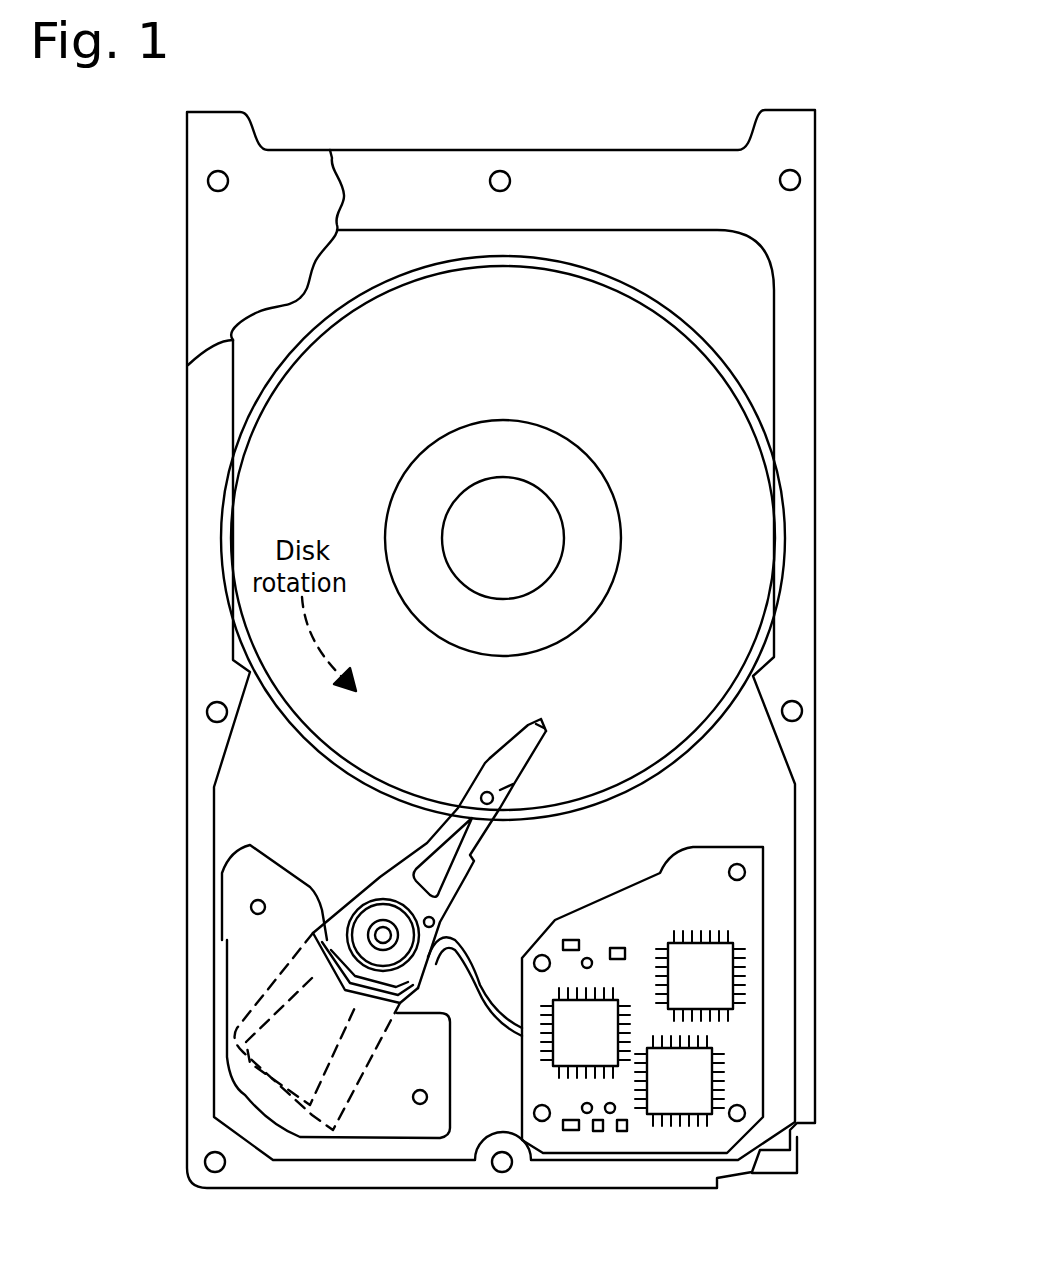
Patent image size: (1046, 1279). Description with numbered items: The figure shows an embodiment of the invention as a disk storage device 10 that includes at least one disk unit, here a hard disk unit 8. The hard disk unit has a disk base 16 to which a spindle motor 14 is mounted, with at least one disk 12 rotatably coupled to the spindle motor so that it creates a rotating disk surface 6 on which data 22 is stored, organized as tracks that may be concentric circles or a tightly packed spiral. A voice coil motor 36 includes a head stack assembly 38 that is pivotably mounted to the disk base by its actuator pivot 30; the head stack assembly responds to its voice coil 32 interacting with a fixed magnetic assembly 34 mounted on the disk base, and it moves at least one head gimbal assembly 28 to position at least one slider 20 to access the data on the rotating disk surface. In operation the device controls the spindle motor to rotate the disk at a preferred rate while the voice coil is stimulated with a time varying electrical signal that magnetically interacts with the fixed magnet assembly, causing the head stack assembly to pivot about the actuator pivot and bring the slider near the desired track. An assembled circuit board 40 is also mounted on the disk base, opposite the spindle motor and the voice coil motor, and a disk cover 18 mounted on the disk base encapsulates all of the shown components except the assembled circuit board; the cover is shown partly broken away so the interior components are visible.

The disk storage device 10 is at (530, 138).
The hard disk unit 8 is at (514, 619).
The rotating disk surface 6 is at (632, 368).
The spindle motor 14 is at (503, 538).
The disk 12 is at (743, 470).
The disk base 16 is at (790, 345).
The disk cover 18 is at (228, 245).
The data 22 is at (621, 535).
The slider 20 is at (542, 720).
The head gimbal assembly 28 is at (518, 757).
The actuator pivot 30 is at (385, 920).
The head stack assembly 38 is at (447, 920).
The voice coil motor 36 is at (225, 1036).
The voice coil 32 is at (253, 1087).
The fixed magnetic assembly 34 is at (388, 1118).
The assembled circuit board 40 is at (797, 1142).